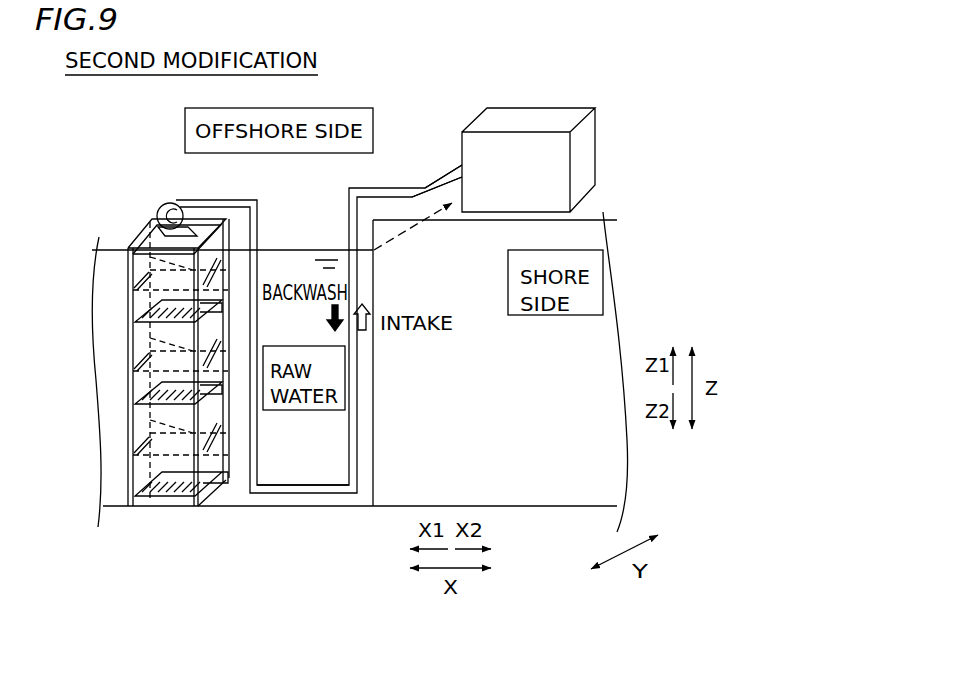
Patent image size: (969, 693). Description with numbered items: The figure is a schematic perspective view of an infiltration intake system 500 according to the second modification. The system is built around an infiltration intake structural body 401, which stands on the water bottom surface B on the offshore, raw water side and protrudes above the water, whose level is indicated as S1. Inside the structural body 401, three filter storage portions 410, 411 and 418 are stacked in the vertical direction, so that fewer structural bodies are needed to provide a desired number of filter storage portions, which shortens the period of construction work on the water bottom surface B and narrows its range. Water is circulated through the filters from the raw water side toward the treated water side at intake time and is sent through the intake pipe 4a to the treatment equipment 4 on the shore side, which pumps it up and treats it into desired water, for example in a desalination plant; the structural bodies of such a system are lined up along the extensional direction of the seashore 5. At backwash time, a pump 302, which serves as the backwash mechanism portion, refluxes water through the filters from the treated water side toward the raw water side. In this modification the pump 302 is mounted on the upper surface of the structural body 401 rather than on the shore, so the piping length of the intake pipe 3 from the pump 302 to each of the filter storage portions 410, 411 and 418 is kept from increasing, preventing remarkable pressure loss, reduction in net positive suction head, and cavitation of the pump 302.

The infiltration intake system 500 is at (452, 102).
The treatment equipment 4 is at (554, 115).
The intake pipe 4a is at (451, 197).
The seashore 5 is at (442, 177).
The intake pipe 3 is at (210, 200).
The pump 302 is at (164, 203).
The infiltration intake structural body 401 is at (137, 345).
The filter storage portion 410 is at (122, 286).
The filter storage portion 411 is at (122, 377).
The filter storage portion 418 is at (122, 478).
The water surface S1 is at (300, 248).
The water bottom surface B is at (340, 506).